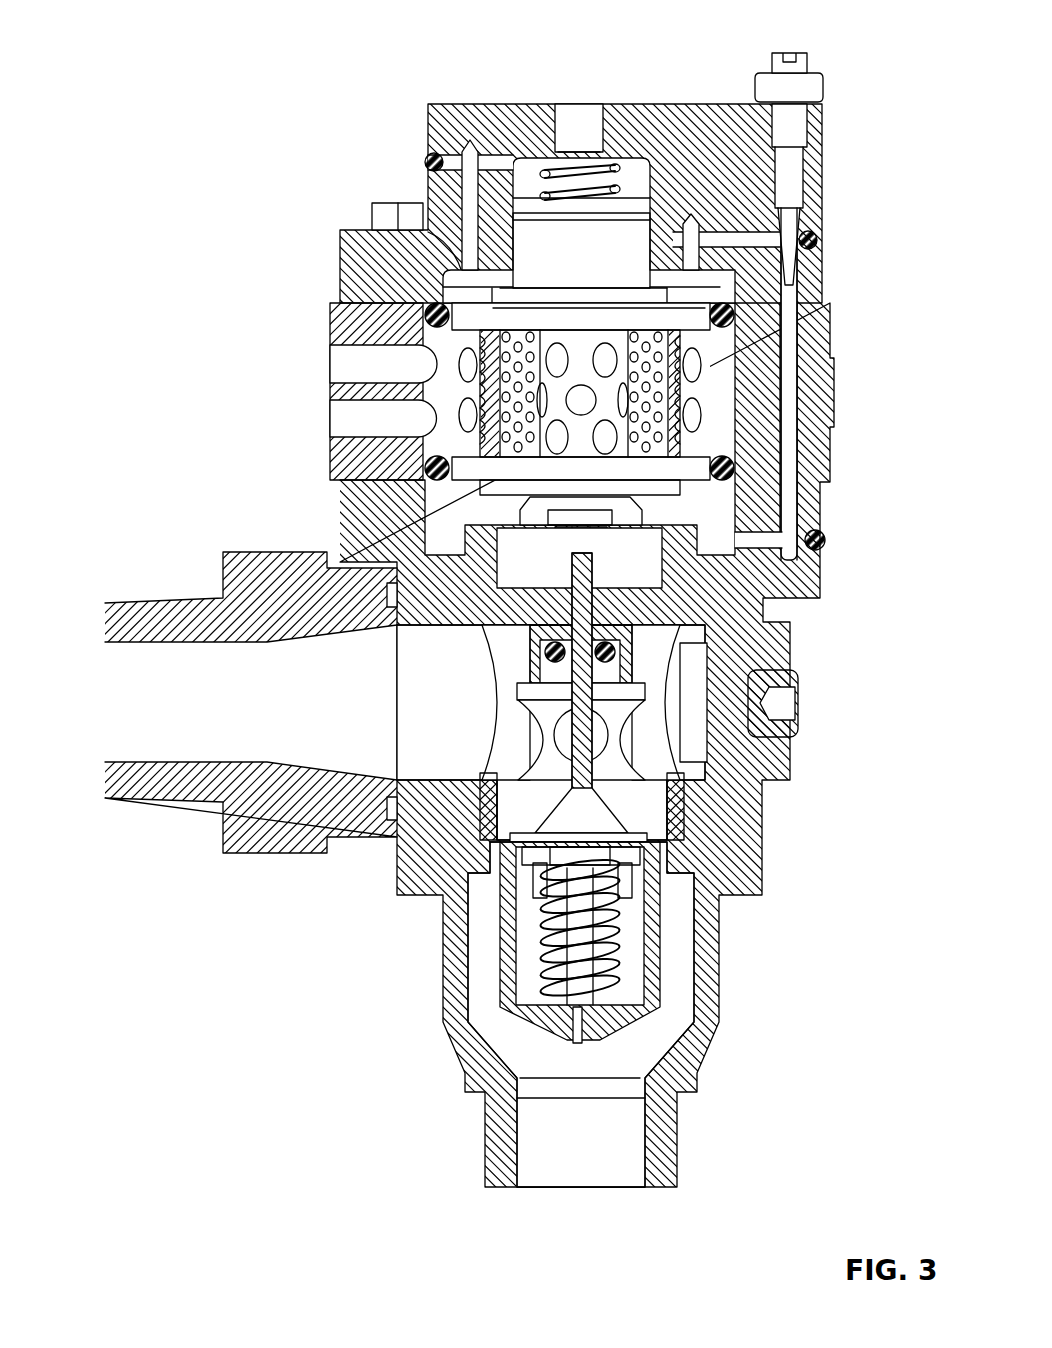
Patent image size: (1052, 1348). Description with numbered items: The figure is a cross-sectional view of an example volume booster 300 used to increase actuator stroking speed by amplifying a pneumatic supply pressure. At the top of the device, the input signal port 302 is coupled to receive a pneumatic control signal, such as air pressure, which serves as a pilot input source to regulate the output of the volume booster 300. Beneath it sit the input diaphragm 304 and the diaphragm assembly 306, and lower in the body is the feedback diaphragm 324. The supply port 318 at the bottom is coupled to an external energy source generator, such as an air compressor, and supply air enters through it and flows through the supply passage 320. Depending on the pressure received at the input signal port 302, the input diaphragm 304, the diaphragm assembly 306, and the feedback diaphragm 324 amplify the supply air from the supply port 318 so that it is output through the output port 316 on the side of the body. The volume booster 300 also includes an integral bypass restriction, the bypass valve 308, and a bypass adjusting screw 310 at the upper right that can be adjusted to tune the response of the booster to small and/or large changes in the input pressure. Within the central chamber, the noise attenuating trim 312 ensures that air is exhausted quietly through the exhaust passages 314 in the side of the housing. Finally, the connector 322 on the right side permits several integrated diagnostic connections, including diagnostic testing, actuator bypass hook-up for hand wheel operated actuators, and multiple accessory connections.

The volume booster 300 is at (160, 46).
The input signal port 302 is at (586, 103).
The input diaphragm 304 is at (734, 312).
The diaphragm assembly 306 is at (508, 316).
The bypass valve 308 is at (812, 244).
The bypass adjusting screw 310 is at (826, 89).
The noise attenuating trim 312 is at (486, 377).
The exhaust passages 314 is at (308, 398).
The output port 316 is at (104, 710).
The supply port 318 is at (592, 1200).
The supply passage 320 is at (586, 814).
The connector 322 is at (804, 702).
The feedback diaphragm 324 is at (738, 474).